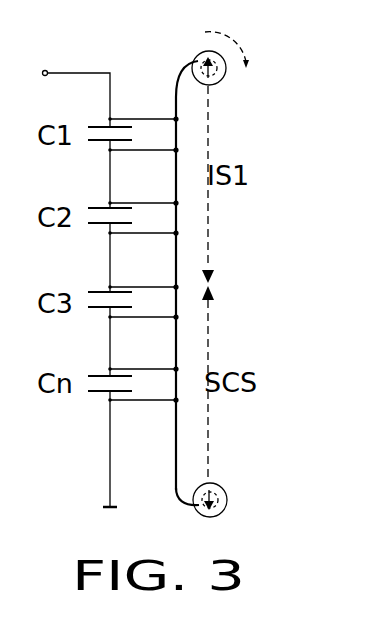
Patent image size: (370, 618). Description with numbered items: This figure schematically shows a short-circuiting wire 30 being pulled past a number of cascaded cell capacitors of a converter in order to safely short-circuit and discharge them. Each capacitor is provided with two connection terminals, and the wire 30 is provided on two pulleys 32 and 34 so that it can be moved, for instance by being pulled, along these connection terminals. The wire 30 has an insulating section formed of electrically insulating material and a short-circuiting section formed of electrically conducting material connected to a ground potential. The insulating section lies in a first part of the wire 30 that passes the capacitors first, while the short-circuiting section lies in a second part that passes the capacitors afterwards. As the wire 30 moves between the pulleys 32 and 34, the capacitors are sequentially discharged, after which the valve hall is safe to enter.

The wire 30 is at (176, 266).
The pulley 32 is at (250, 60).
The pulley 34 is at (236, 496).